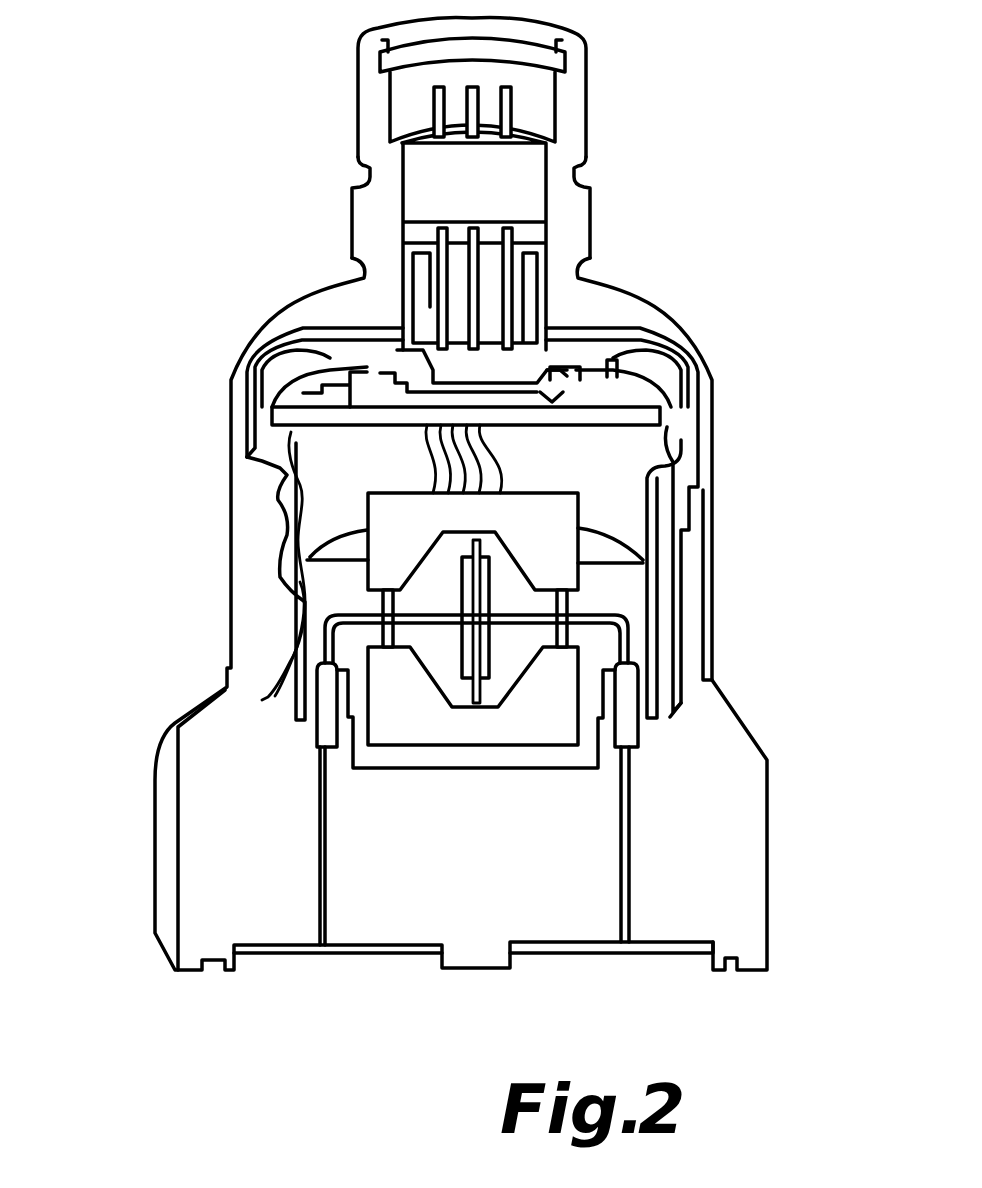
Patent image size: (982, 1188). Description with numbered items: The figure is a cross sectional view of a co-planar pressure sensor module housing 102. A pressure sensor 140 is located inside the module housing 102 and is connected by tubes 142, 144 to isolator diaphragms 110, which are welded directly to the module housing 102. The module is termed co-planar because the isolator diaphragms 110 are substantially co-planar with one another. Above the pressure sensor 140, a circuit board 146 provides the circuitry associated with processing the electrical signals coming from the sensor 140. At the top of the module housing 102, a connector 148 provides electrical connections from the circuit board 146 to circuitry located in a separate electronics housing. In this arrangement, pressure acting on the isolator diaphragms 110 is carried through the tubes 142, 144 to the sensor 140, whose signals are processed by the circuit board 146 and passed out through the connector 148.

The module housing 102 is at (153, 812).
The isolator diaphragms 110 is at (340, 953).
The pressure sensor 140 is at (580, 527).
The tube 142 is at (632, 614).
The tube 144 is at (323, 643).
The circuit board 146 is at (558, 390).
The connector 148 is at (587, 118).